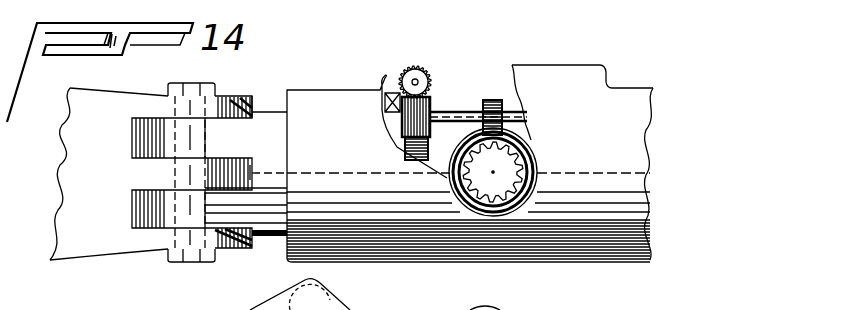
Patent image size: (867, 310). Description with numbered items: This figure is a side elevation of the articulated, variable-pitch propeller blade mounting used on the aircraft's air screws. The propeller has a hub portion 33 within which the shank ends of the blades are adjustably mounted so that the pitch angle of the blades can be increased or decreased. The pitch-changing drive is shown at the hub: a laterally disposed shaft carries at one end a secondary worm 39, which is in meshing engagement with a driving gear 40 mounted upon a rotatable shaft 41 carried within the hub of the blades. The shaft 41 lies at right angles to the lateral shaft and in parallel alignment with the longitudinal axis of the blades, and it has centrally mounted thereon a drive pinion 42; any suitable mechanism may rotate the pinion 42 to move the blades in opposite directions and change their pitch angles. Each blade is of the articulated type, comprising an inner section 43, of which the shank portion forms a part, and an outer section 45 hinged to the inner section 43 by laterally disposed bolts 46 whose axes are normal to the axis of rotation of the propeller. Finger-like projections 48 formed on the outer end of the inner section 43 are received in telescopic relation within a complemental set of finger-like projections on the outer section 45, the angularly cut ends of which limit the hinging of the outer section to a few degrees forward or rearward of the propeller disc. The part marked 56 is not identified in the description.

The hub portion 33 is at (628, 150).
The secondary worm 39 is at (422, 72).
The driving gear 40 is at (430, 103).
The rotatable shaft 41 is at (467, 117).
The drive pinion 42 is at (497, 108).
The inner section 43 is at (268, 113).
The outer section 45 is at (72, 135).
The bolt 46 is at (190, 108).
The finger-like projection 48 is at (268, 137).
The bracket 56 is at (427, 162).